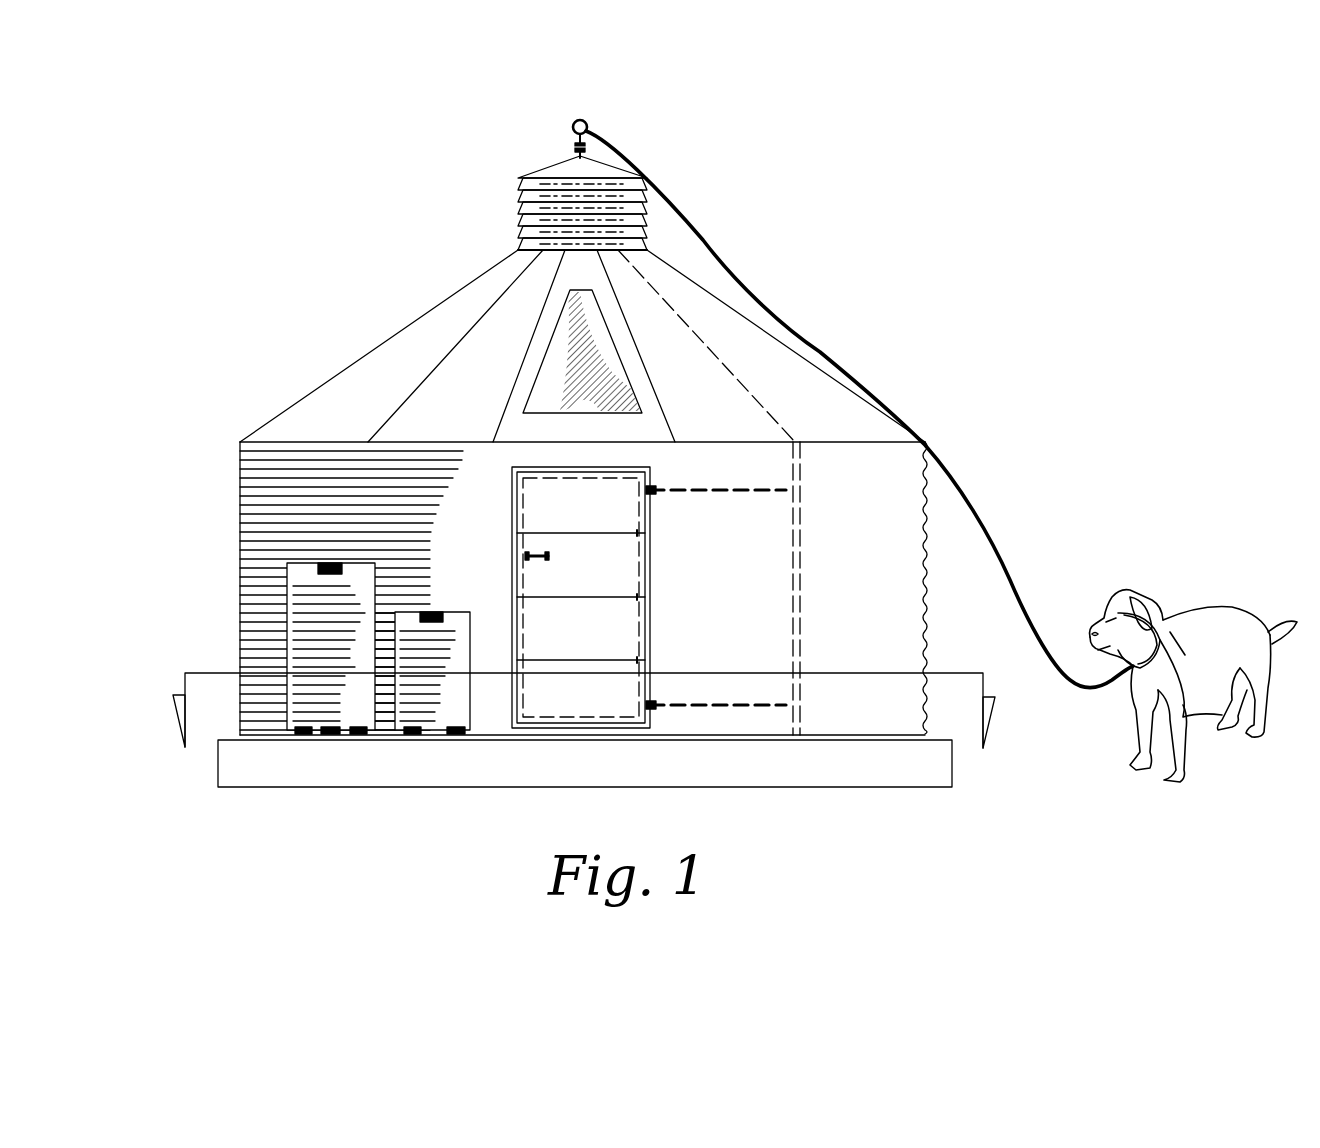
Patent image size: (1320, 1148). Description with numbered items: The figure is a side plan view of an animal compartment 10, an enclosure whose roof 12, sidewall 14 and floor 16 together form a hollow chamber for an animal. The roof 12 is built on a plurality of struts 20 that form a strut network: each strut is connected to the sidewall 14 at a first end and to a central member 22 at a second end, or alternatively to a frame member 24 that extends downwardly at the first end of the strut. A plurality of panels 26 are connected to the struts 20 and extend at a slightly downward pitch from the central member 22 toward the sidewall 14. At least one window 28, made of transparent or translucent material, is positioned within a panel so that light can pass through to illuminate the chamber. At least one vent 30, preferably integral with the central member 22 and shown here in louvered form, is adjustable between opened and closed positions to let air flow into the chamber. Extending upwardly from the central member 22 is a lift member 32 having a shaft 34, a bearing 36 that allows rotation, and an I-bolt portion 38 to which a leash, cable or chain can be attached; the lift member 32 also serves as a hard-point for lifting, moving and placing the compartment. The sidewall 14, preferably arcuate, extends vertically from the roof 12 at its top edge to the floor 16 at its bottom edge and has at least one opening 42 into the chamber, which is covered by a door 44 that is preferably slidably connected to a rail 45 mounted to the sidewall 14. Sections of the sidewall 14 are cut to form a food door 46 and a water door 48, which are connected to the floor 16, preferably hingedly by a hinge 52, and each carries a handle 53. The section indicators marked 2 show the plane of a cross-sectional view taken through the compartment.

The animal compartment 10 is at (300, 232).
The roof 12 is at (848, 381).
The sidewall 14 is at (929, 600).
The floor 16 is at (882, 740).
The struts 20 is at (725, 313).
The central member 22 is at (546, 167).
The frame member 24 is at (803, 580).
The panels 26 is at (482, 361).
The window 28 is at (547, 351).
The vent 30 is at (520, 204).
The lift member 32 is at (549, 70).
The shaft 34 is at (596, 137).
The bearing 36 is at (575, 140).
The I-bolt portion 38 is at (580, 119).
The opening 42 is at (681, 540).
The door 44 is at (594, 580).
The rail 45 is at (729, 712).
The food door 46 is at (287, 615).
The water door 48 is at (470, 707).
The hinge 52 is at (331, 734).
The handle 53 is at (432, 612).
The section line 2- 2 is at (574, 710).